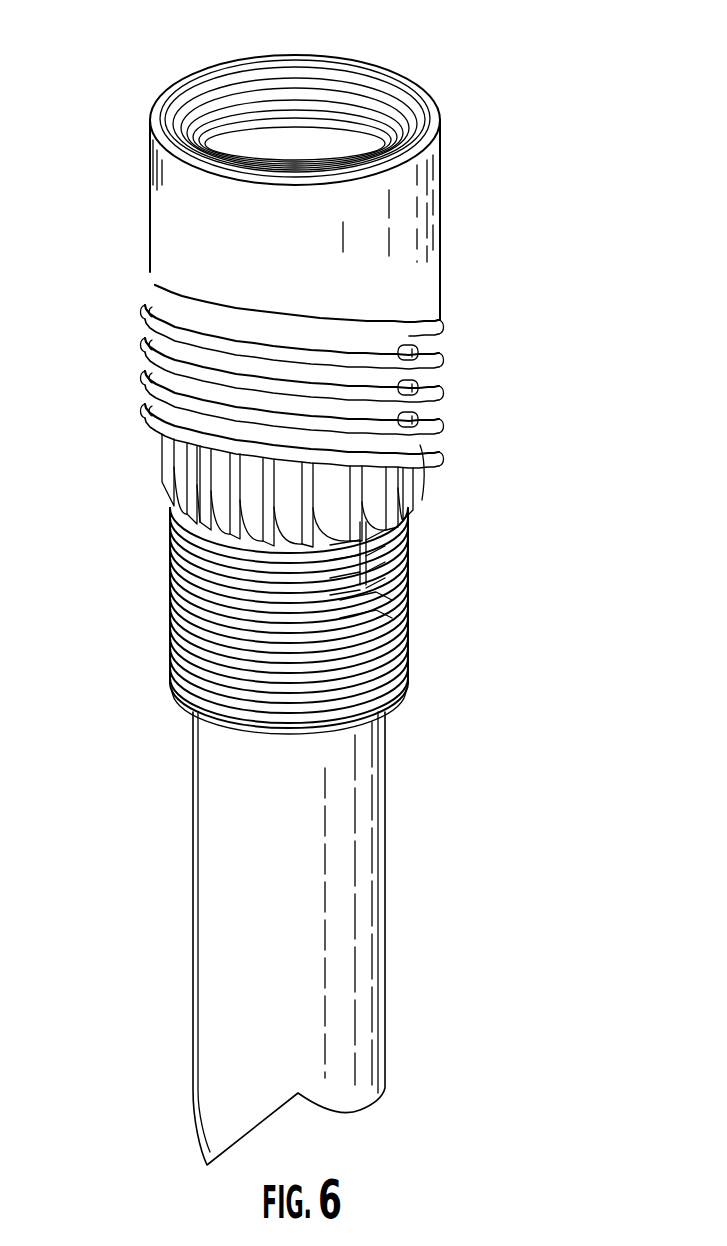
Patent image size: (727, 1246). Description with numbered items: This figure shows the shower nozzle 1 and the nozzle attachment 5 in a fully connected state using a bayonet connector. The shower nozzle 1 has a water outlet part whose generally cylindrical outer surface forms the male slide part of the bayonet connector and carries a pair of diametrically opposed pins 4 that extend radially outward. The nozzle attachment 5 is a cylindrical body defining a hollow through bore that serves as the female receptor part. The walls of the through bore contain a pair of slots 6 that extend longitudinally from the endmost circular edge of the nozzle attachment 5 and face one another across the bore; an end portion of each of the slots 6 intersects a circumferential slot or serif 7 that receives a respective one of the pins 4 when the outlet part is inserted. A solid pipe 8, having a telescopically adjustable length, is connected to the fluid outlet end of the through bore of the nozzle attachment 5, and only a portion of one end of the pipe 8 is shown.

The shower nozzle 1 is at (444, 198).
The bayonet pins 4 is at (392, 607).
The nozzle attachment 5 is at (414, 522).
The slots 6 is at (378, 560).
The circumferential slot or serif 7 is at (42, 133).
The solid pipe 8 is at (383, 957).